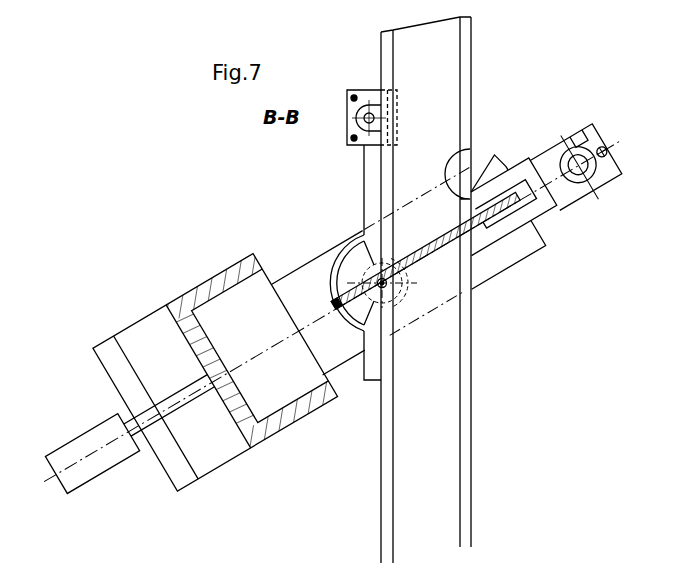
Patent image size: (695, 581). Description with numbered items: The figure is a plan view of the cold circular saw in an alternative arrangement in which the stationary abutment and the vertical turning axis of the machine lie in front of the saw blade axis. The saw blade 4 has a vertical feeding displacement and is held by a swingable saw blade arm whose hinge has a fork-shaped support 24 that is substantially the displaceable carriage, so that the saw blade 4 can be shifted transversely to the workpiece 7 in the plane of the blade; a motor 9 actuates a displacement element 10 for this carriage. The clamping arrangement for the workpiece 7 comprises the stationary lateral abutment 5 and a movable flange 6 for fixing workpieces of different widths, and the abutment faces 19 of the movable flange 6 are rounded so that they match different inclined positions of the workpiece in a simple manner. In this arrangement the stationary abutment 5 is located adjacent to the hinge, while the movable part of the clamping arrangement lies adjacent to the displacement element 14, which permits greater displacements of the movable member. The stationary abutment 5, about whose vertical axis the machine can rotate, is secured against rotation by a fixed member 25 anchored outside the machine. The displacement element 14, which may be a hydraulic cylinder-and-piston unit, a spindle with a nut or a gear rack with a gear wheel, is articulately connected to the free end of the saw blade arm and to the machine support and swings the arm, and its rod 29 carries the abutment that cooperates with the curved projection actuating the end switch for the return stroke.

The saw blade 4 is at (442, 250).
The stationary abutment 5 is at (334, 278).
The movable flange 6 is at (540, 216).
The workpiece 7 is at (452, 83).
The motor 9 is at (108, 458).
The displacement element 10 is at (192, 400).
The displacement element 14 is at (578, 146).
The abutment faces 19 is at (462, 170).
The fork-shaped support 24 is at (288, 420).
The fixed member 25 is at (363, 97).
The rod 29 is at (605, 147).